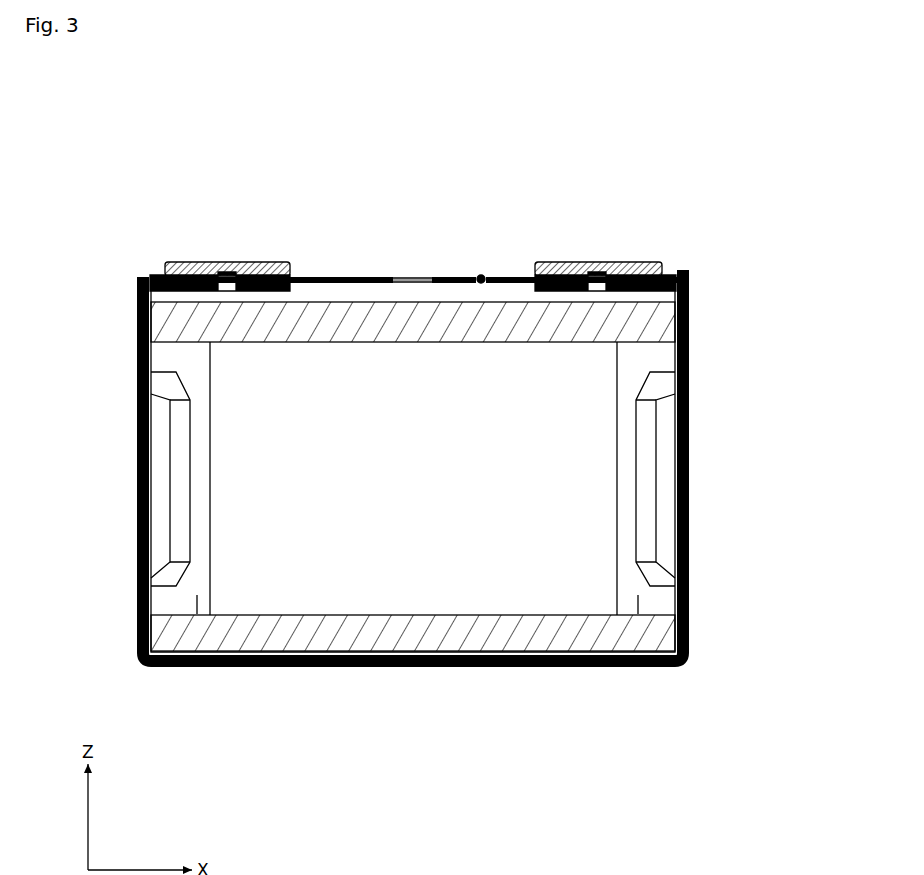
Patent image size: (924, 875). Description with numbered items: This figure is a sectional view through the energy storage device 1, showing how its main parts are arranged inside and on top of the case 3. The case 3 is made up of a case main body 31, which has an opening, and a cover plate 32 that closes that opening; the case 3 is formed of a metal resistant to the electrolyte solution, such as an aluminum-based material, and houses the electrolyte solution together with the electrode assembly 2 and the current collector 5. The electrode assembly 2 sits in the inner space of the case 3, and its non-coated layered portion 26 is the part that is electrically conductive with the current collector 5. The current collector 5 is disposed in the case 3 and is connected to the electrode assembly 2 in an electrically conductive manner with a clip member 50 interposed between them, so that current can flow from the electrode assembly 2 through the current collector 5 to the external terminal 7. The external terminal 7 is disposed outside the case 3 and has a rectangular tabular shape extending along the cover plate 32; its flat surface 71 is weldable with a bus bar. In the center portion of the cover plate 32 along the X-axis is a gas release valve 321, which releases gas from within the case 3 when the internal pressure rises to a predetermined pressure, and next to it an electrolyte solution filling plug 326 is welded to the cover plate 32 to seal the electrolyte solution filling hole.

The energy storage device 1 is at (690, 144).
The electrode assembly 2 is at (458, 654).
The case 3 is at (786, 290).
The case main body 31 is at (692, 340).
The cover plate 32 is at (679, 271).
The gas release valve 321 is at (407, 278).
The electrolyte solution filling plug 326 is at (479, 274).
The current collector 5 is at (162, 520).
The clip member 50 is at (182, 443).
The external terminal 7 is at (212, 260).
The surface 71 is at (253, 262).
The non-coated layered portion 26 is at (197, 595).